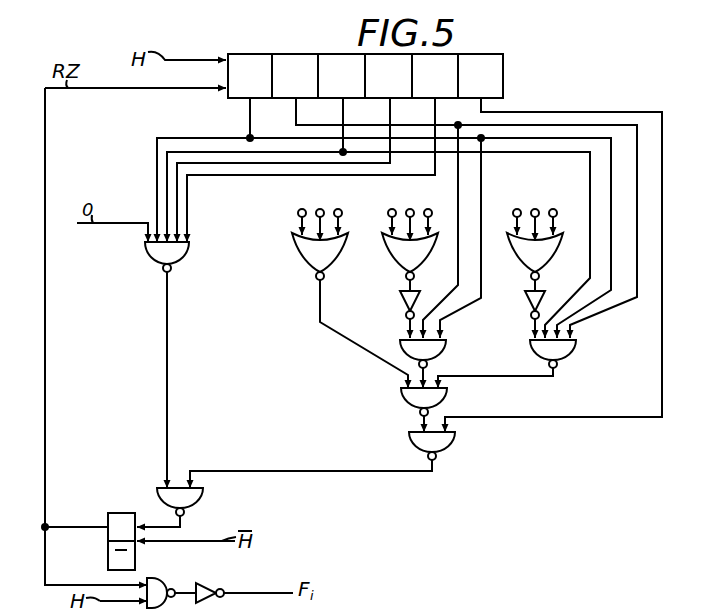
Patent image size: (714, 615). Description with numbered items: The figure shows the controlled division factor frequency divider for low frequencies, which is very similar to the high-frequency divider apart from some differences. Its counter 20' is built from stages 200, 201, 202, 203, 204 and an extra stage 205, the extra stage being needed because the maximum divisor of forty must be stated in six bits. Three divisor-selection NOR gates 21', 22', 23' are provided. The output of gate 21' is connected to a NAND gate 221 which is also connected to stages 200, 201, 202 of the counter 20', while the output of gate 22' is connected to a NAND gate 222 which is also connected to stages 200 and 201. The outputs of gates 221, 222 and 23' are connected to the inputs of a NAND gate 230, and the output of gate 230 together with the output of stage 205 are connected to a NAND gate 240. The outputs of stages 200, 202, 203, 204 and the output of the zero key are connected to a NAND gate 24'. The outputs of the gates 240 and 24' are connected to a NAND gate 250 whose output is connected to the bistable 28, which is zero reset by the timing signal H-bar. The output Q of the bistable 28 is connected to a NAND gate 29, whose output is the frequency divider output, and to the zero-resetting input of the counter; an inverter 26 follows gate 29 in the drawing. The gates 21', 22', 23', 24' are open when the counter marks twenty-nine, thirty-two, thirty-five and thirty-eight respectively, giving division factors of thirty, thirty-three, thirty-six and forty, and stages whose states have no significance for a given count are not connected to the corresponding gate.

The counter 20' is at (387, 76).
The stage 200 is at (250, 76).
The stage 201 is at (295, 76).
The stage 202 is at (341, 76).
The stage 203 is at (388, 76).
The stage 204 is at (435, 76).
The stage 205 is at (480, 76).
The NAND gate 24' is at (185, 365).
The NOR gate 23' is at (333, 288).
The NOR gate 22' is at (397, 263).
The NOR gate 21' is at (527, 263).
The NAND gate 222 is at (436, 348).
The NAND gate 221 is at (572, 346).
The NAND gate 230 is at (400, 393).
The NAND gate 240 is at (454, 438).
The NAND gate 250 is at (201, 492).
The bistable 28 is at (123, 503).
The NAND gate 29 is at (169, 576).
The inverter 26 is at (211, 586).